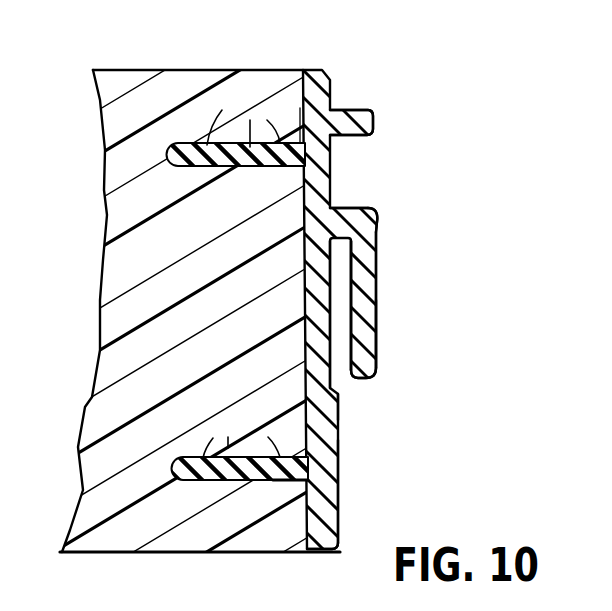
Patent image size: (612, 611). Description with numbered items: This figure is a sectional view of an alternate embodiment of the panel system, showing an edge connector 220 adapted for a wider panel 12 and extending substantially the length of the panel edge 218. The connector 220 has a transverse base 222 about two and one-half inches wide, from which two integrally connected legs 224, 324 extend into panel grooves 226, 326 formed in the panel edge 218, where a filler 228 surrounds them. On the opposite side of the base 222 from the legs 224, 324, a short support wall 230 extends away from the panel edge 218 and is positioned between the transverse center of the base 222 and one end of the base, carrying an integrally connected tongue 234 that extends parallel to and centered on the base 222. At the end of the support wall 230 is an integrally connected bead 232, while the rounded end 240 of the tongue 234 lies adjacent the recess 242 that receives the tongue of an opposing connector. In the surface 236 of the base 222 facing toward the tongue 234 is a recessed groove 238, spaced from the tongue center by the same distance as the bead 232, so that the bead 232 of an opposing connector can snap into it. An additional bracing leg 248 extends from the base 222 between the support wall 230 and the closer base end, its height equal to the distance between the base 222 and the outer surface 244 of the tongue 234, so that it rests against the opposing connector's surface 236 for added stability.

The panel / substrate 12 is at (117, 70).
The panel edge 218 is at (321, 70).
The connector 220 is at (355, 69).
The transverse base 222 is at (322, 552).
The leg 224 is at (300, 110).
The panel groove 226 is at (183, 143).
The adhesive filler 228 is at (241, 273).
The support wall 230 is at (338, 210).
The bead 232 is at (378, 224).
The tongue 234 is at (362, 306).
The surface 236 is at (340, 493).
The recessed groove 238 is at (334, 348).
The rounded leg end 240 is at (368, 384).
The recess 242 is at (342, 347).
The outer surface of tongue 244 is at (376, 328).
The bracing leg 248 is at (362, 112).
The leg 324 is at (305, 487).
The panel groove 326 is at (186, 484).